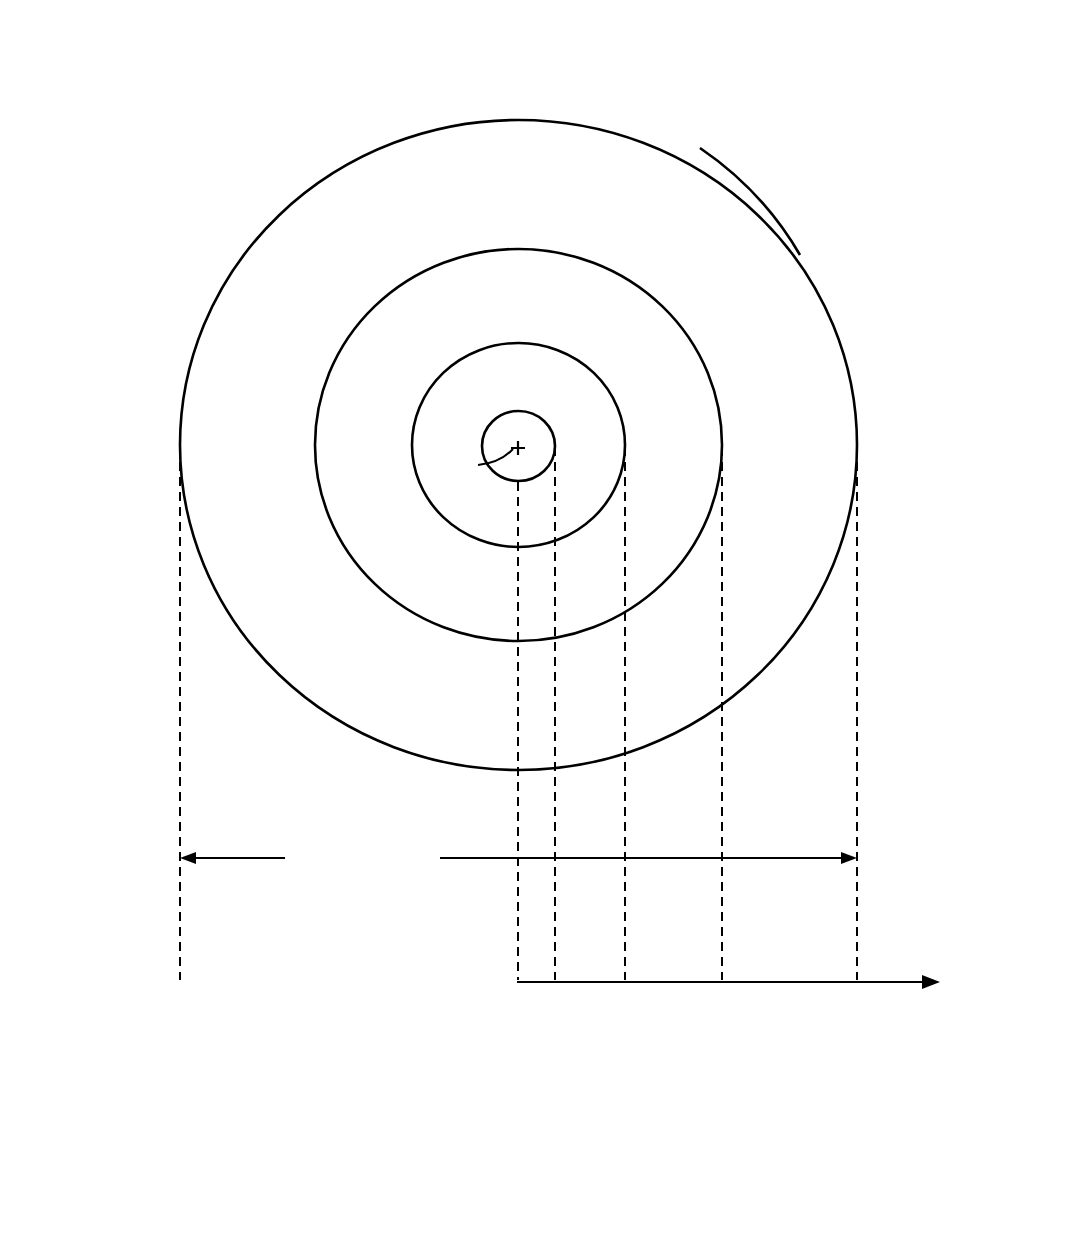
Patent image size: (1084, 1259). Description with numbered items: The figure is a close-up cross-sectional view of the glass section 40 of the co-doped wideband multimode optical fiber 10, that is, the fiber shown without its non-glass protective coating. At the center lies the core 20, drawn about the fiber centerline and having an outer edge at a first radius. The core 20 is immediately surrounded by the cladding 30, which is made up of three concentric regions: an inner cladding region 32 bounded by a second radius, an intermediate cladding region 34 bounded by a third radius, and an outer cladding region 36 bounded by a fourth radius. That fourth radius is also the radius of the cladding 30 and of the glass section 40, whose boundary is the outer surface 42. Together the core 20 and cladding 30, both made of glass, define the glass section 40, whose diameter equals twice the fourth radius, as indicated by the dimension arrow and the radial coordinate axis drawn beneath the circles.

The co-doped wideband multimode optical fiber 10 is at (650, 68).
The core section 20 is at (488, 438).
The cladding section 30 is at (172, 167).
The inner cladding region 32 is at (492, 367).
The intermediate cladding region 34 is at (468, 292).
The outer cladding region 36 is at (327, 207).
The glass section 40 is at (108, 202).
The outer surface 42 is at (758, 213).